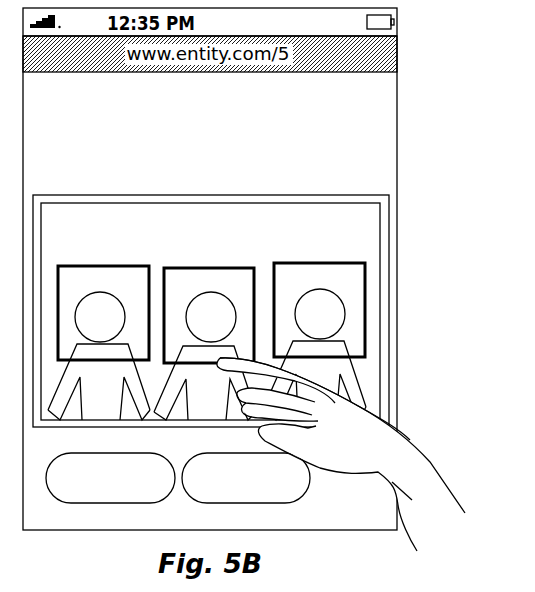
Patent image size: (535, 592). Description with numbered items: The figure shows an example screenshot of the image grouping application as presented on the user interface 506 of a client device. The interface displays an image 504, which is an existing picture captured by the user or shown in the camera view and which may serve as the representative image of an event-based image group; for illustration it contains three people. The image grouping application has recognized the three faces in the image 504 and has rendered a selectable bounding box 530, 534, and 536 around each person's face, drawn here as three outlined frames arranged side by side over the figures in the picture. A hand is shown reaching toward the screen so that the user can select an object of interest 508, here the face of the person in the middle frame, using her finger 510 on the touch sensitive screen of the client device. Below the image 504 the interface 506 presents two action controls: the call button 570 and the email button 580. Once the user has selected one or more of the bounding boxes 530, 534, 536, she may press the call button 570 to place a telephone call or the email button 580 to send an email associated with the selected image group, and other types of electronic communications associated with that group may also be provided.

The image 504 is at (300, 195).
The user interface 506 is at (343, 493).
The object of interest 508 is at (210, 317).
The finger 510 is at (395, 413).
The selectable bounding box 530 is at (95, 266).
The selectable bounding box 534 is at (203, 268).
The selectable bounding box 536 is at (297, 262).
The call button 570 is at (120, 503).
The email button 580 is at (268, 503).